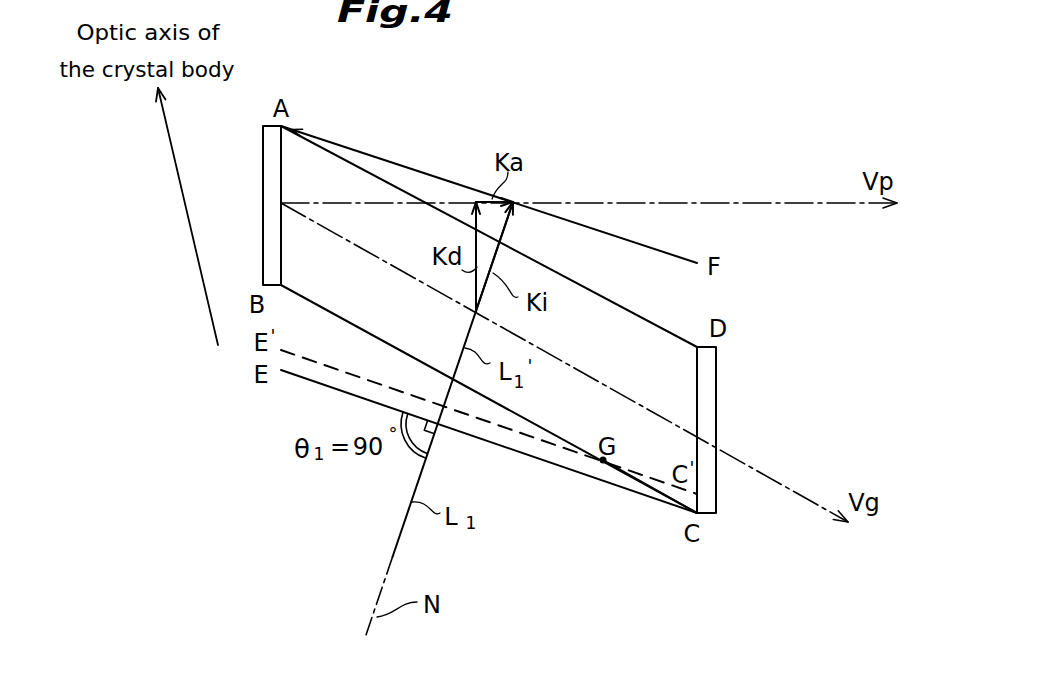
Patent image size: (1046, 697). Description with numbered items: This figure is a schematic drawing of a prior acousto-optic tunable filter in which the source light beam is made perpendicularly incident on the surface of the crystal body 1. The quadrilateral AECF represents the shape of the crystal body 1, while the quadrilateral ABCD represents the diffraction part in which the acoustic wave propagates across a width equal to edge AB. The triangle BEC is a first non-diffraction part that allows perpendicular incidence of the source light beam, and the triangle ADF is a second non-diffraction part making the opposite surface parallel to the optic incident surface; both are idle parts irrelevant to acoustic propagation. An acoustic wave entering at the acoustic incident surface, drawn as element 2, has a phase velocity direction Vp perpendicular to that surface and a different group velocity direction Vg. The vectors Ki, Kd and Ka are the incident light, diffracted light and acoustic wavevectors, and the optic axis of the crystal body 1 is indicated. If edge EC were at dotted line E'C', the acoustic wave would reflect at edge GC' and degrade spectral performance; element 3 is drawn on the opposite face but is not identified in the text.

The crystal body 1 is at (384, 157).
The transducer 2 is at (270, 200).
The acoustic absorber 3 is at (707, 415).